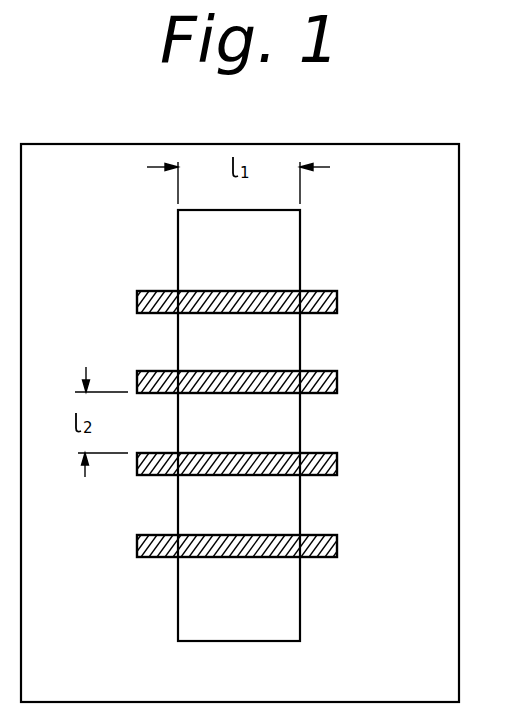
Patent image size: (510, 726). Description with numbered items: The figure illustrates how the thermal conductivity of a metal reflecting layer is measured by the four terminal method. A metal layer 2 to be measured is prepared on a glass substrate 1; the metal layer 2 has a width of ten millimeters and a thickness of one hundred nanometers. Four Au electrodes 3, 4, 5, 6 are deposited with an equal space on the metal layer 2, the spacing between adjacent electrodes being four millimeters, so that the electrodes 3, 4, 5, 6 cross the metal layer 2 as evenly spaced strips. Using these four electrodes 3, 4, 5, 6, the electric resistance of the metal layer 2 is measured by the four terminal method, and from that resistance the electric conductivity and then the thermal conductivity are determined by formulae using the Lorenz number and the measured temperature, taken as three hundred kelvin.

The glass substrate 1 is at (451, 137).
The metal layer 2 is at (303, 229).
The Au electrode 3 is at (340, 299).
The Au electrode 4 is at (340, 379).
The Au electrode 5 is at (340, 462).
The Au electrode 6 is at (340, 542).